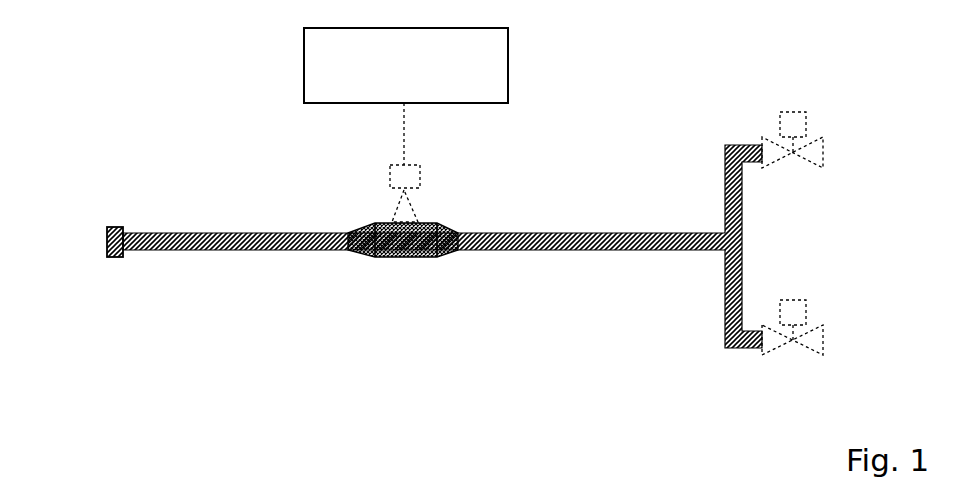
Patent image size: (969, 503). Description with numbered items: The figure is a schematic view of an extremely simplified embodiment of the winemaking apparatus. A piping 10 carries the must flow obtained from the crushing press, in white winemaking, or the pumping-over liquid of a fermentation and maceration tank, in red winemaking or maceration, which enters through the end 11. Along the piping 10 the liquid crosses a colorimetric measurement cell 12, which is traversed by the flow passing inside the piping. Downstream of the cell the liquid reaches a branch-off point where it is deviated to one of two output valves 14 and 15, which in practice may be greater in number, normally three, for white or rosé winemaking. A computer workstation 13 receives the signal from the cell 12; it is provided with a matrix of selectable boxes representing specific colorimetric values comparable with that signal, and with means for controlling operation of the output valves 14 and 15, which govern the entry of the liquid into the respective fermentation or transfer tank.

The piping 10 is at (197, 236).
The end 11 is at (113, 227).
The colorimetric measurement cell 12 is at (412, 258).
The computer workstation 13 is at (491, 77).
The output valve 14 is at (822, 150).
The output valve 15 is at (822, 340).